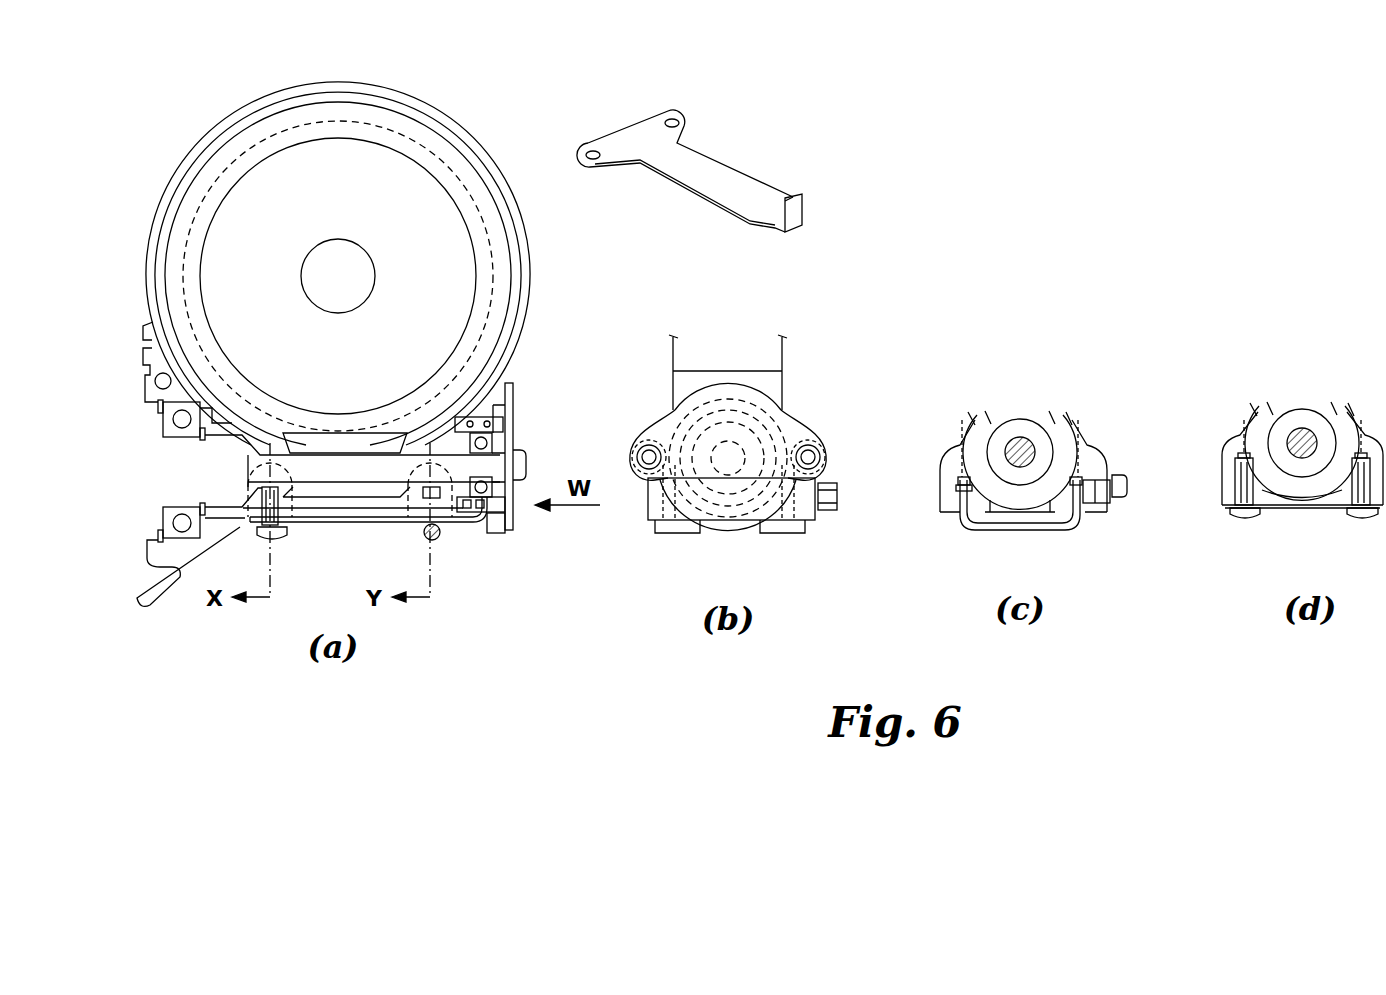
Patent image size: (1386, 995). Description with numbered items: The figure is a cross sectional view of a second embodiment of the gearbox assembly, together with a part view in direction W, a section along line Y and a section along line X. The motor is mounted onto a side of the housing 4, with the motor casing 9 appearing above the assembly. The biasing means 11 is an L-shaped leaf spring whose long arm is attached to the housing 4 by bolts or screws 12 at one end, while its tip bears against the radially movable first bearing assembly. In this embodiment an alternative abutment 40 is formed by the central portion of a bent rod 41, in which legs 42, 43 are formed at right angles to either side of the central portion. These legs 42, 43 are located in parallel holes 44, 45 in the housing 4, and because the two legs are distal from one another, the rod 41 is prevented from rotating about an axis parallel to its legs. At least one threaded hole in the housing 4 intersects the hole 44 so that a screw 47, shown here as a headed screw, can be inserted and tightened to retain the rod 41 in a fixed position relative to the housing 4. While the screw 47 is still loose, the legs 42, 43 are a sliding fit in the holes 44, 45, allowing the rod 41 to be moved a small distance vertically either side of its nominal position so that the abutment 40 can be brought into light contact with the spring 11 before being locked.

The motor 9 is at (455, 142).
The biasing means 11 is at (349, 532).
The housing 4 is at (517, 367).
The abutment 40 is at (448, 548).
The hole 44 is at (822, 517).
The hole 45 is at (958, 469).
The leg 43 is at (956, 486).
The screw 47 is at (1127, 477).
The leg 42 is at (1106, 500).
The bent rod 41 is at (994, 529).
The bolts or screws 12 is at (1250, 520).